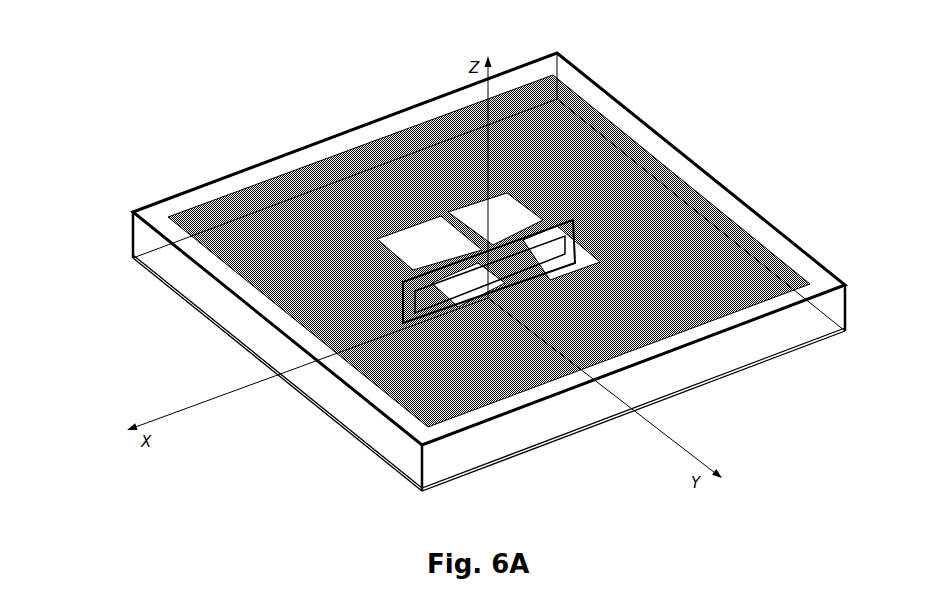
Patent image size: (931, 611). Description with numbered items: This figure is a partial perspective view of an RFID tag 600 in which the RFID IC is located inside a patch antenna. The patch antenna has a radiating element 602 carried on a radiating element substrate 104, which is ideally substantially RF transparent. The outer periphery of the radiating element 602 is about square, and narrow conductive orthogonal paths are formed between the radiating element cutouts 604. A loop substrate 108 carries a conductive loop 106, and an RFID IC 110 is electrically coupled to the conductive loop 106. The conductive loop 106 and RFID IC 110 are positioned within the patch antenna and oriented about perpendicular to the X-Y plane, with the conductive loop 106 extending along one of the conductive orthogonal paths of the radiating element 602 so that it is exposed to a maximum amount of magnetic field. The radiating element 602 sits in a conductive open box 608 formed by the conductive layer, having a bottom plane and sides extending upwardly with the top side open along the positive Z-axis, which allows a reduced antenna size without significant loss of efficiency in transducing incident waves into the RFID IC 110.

The RFID tag 600 is at (92, 73).
The radiating element 602 is at (310, 230).
The radiating element cutouts 604 is at (480, 207).
The radiating element substrate 104 is at (635, 128).
The loop substrate 108 is at (555, 255).
The RFID IC 110 is at (480, 290).
The conductive loop 106 is at (420, 313).
The conductive open box 608 is at (195, 287).